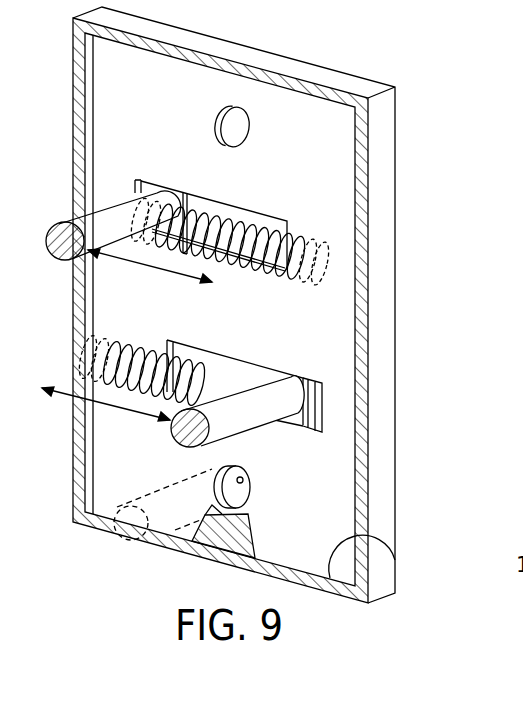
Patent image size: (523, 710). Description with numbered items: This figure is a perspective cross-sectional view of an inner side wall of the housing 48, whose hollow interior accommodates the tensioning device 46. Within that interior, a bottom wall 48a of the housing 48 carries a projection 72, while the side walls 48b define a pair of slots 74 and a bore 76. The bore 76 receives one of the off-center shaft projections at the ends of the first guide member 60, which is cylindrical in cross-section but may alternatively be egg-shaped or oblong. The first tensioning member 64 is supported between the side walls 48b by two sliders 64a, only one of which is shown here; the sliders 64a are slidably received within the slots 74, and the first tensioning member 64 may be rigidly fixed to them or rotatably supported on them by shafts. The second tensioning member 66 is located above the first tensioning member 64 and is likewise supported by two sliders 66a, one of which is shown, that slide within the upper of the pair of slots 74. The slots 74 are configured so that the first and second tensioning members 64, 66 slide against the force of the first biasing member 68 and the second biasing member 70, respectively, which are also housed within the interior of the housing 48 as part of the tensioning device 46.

The tensioning device 46 is at (427, 118).
The housing 48 is at (388, 199).
The bottom wall 48a is at (393, 561).
The side wall 48b is at (312, 132).
The first guide member 60 is at (125, 545).
The first tensioning member 64 is at (174, 441).
The slider 64a is at (298, 375).
The second tensioning member 66 is at (54, 233).
The slider 66a is at (180, 205).
The first biasing member 68 is at (135, 340).
The second biasing member 70 is at (306, 242).
The projection 72 is at (252, 537).
The slot 74 is at (247, 218).
The bore 76 is at (243, 483).